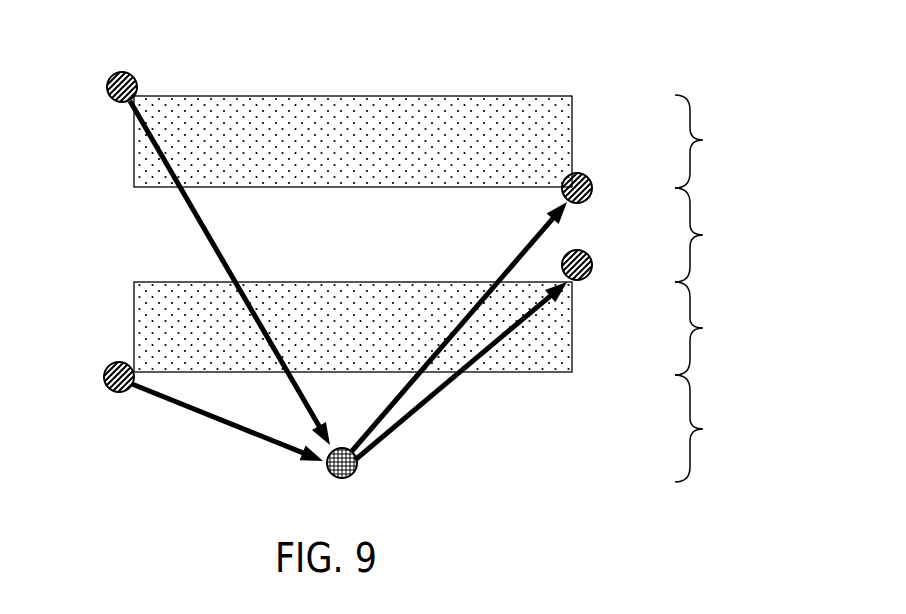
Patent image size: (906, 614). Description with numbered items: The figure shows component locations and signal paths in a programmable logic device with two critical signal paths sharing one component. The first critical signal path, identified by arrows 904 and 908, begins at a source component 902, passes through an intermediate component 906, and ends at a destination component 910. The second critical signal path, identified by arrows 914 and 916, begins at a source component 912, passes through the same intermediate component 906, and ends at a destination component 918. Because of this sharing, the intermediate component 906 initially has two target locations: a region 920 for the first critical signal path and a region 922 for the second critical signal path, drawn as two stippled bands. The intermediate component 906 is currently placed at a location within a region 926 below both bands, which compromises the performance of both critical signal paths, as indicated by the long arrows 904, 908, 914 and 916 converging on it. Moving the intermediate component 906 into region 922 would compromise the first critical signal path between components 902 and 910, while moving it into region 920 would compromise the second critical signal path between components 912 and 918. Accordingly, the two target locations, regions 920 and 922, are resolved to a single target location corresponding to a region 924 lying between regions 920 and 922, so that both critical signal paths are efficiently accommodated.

The source component 902 is at (114, 75).
The arrow 904 is at (212, 230).
The intermediate component 906 is at (352, 475).
The arrow 908 is at (527, 243).
The destination component 910 is at (592, 188).
The source component 912 is at (104, 388).
The arrow 914 is at (210, 418).
The arrow 916 is at (433, 398).
The destination component 918 is at (592, 265).
The region 920 is at (703, 140).
The region 922 is at (703, 328).
The region 924 is at (703, 235).
The region 926 is at (703, 429).